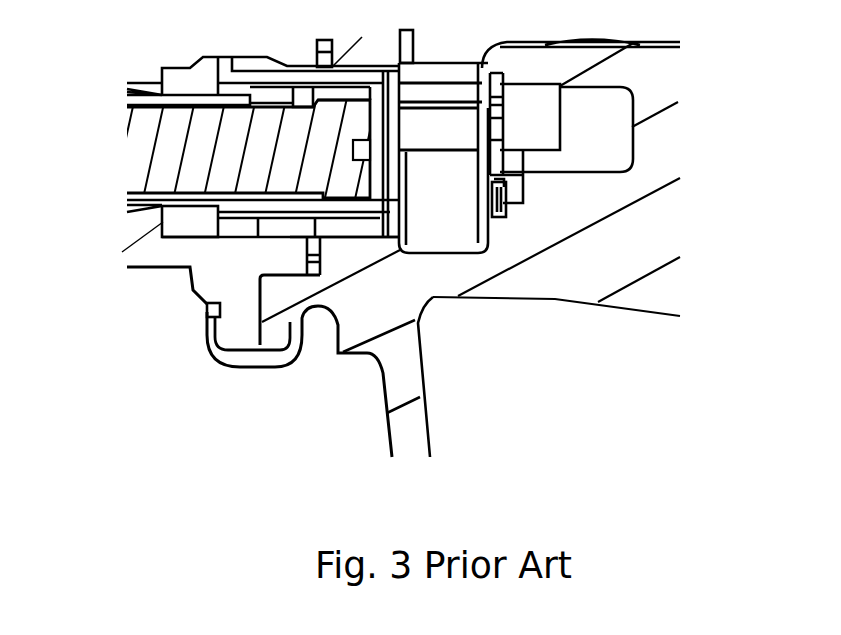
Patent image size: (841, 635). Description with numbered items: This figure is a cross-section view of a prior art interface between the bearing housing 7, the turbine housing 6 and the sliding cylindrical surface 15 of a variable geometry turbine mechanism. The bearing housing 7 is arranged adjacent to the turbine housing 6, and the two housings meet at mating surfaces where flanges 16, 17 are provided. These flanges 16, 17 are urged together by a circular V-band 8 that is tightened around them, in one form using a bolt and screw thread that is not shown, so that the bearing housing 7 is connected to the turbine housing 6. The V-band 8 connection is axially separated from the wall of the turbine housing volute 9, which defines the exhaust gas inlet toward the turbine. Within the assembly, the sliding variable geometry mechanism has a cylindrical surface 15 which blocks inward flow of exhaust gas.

The turbine housing 6 is at (680, 233).
The bearing housing 7 is at (118, 255).
The V-band 8 is at (221, 361).
The turbine housing volute 9 is at (437, 428).
The cylindrical surface 15 is at (345, 230).
The flange 16 is at (237, 299).
The flange 17 is at (279, 330).